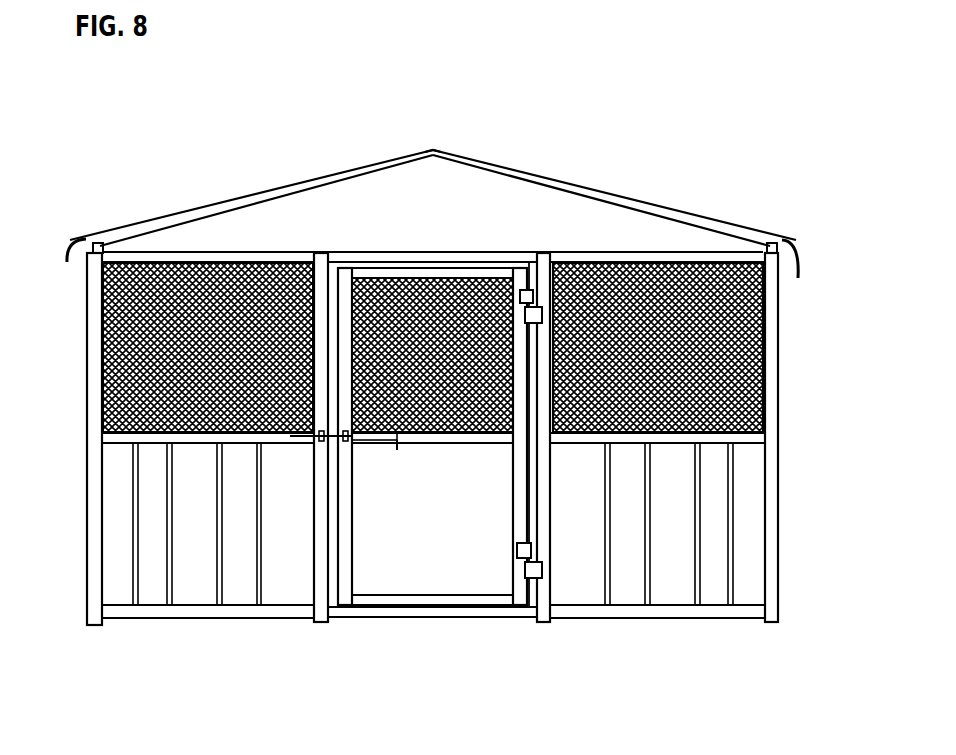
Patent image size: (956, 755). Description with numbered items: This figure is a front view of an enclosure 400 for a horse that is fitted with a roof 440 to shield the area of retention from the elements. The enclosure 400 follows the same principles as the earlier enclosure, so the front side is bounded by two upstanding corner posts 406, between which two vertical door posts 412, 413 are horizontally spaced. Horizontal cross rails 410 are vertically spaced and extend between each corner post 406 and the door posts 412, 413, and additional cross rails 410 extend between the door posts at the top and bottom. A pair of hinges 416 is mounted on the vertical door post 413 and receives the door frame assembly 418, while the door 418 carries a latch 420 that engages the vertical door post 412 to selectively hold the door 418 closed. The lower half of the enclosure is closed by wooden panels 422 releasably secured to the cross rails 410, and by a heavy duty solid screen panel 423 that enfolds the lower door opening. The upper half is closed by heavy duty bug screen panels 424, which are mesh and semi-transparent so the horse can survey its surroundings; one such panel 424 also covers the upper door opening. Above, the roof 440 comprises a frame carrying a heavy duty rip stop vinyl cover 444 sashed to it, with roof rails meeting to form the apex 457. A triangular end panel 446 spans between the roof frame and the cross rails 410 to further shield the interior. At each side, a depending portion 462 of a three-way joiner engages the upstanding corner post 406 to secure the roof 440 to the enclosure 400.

The enclosure 400 is at (130, 641).
The upstanding corner post 406 is at (97, 380).
The horizontal cross rail 410 is at (290, 257).
The vertical door post 412 is at (342, 303).
The vertical door post 413 is at (543, 463).
The hinge 416 is at (525, 290).
The door frame assembly 418 is at (418, 583).
The latch 420 is at (370, 438).
The wooden panel 422 is at (245, 587).
The solid screen panel 423 is at (450, 547).
The bug screen panel 424 is at (220, 347).
The roof 440 is at (207, 205).
The cover 444 is at (582, 186).
The triangular end panel 446 is at (440, 210).
The apex 457 is at (435, 150).
The depending portion 462 is at (93, 247).